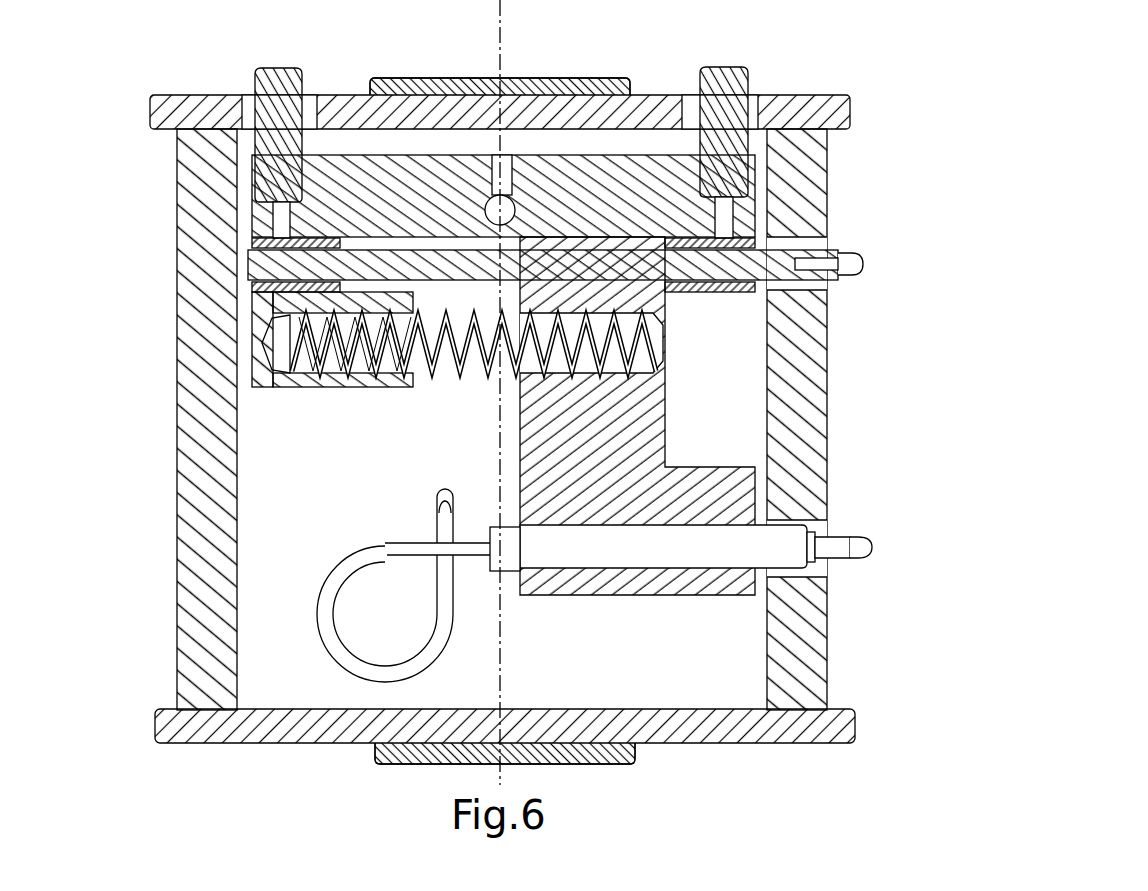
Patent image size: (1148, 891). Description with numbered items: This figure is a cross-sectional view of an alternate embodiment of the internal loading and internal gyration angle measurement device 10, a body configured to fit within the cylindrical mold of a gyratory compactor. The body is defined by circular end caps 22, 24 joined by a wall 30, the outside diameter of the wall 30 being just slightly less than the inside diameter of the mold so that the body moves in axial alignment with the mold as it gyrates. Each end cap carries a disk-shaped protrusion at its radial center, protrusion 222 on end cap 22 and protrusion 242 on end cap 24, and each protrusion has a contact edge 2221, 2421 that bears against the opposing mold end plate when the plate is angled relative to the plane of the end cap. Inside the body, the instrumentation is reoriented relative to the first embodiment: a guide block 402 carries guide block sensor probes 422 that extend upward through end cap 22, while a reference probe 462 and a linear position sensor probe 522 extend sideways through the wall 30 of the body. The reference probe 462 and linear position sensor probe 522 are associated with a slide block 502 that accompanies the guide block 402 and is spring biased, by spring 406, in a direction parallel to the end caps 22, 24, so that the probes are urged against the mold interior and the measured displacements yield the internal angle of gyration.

The internal loading and internal gyration angle measurement device 10 is at (102, 124).
The end cap 22 is at (850, 108).
The protrusion 222 is at (527, 78).
The contact edge 2221 is at (623, 77).
The end cap 24 is at (855, 725).
The protrusion 242 is at (597, 763).
The contact edge 2421 is at (382, 763).
The wall 30 is at (802, 393).
The guide block 402 is at (333, 172).
The spring 406 is at (450, 372).
The guide block sensor probes 422 is at (285, 70).
The reference probe 462 is at (857, 275).
The slide block 502 is at (648, 433).
The linear position sensor probe 522 is at (862, 555).